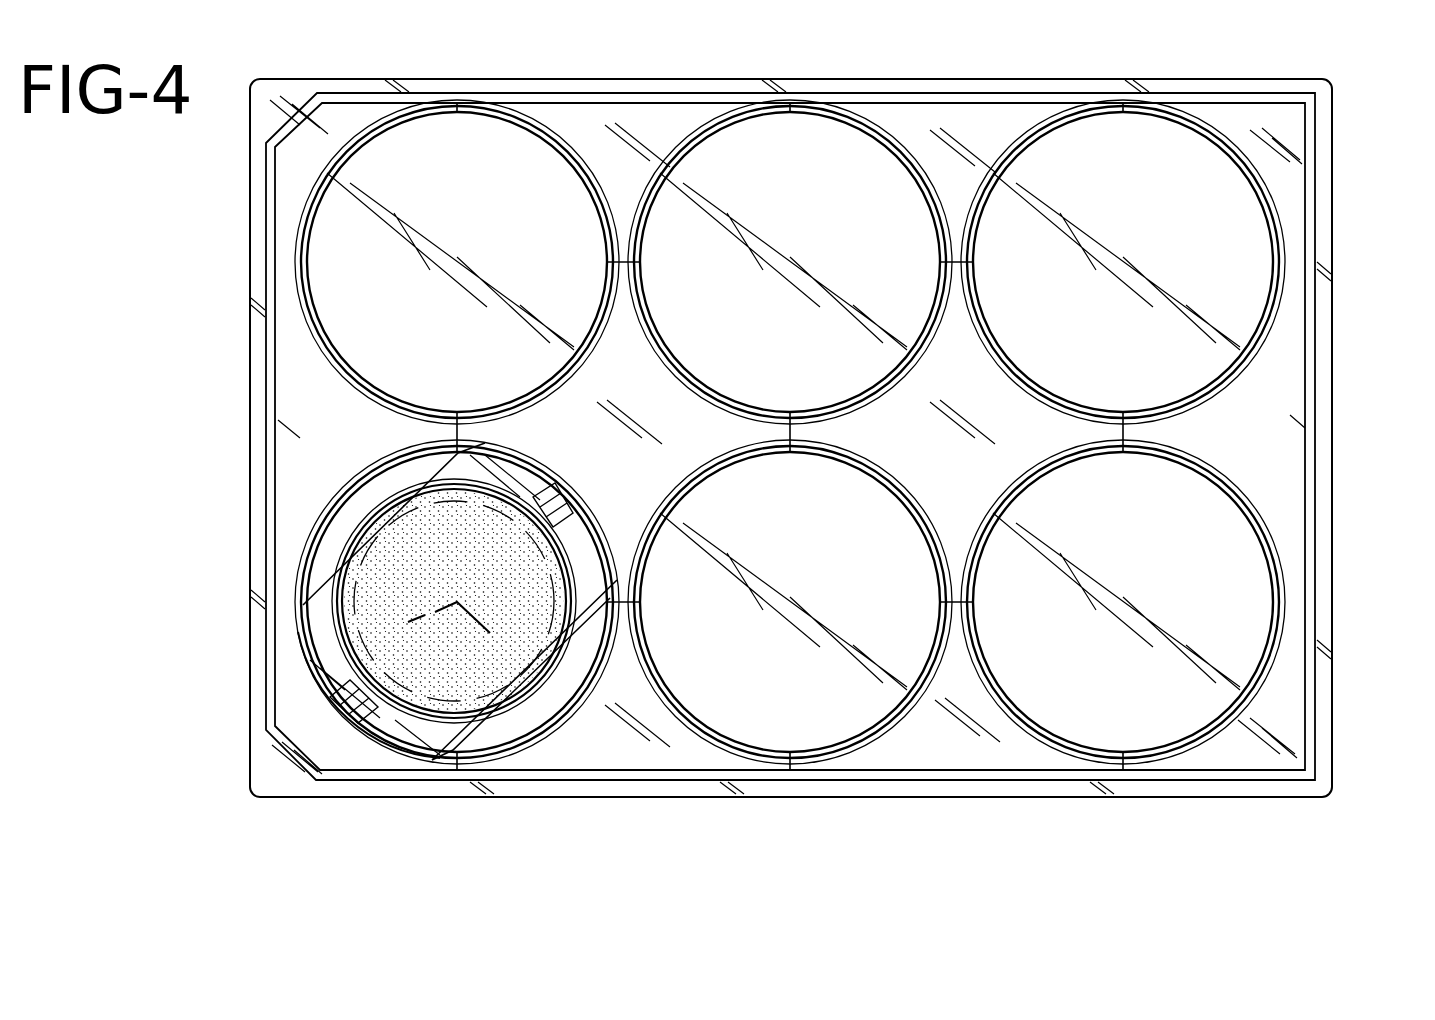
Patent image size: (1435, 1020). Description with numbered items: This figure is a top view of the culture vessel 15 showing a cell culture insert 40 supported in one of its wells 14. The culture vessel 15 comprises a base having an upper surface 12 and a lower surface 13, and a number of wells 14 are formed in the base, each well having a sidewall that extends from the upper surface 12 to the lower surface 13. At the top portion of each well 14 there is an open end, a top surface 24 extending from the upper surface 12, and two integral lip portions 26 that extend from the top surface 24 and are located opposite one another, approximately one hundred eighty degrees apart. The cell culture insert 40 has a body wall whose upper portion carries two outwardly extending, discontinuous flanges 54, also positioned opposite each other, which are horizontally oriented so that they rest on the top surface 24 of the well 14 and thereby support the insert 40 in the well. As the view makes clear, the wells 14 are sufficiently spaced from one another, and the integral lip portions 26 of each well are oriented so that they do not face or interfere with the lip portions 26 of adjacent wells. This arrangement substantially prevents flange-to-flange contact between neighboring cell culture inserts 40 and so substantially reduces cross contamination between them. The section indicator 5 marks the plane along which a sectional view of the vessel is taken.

The upper surface 12 is at (1293, 757).
The lower surface 13 is at (248, 218).
The wells 14 is at (318, 344).
The culture vessel 15 is at (1332, 238).
The top surface 24 is at (453, 750).
The integral lip portions 26 is at (530, 740).
The cell culture insert 40 is at (296, 647).
The flanges 54 is at (408, 738).
The section line 5- 5 is at (181, 722).